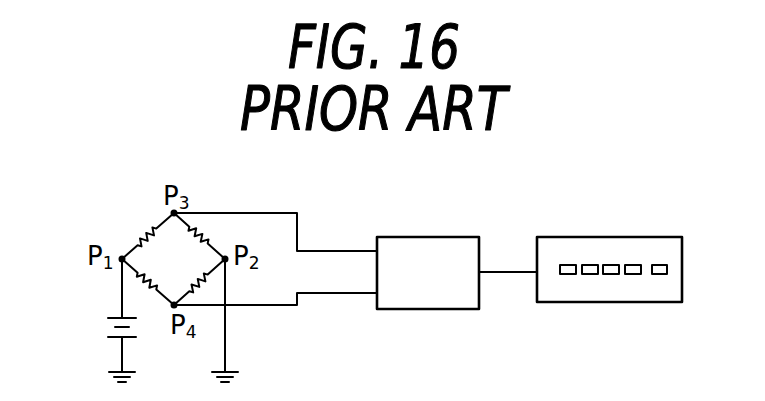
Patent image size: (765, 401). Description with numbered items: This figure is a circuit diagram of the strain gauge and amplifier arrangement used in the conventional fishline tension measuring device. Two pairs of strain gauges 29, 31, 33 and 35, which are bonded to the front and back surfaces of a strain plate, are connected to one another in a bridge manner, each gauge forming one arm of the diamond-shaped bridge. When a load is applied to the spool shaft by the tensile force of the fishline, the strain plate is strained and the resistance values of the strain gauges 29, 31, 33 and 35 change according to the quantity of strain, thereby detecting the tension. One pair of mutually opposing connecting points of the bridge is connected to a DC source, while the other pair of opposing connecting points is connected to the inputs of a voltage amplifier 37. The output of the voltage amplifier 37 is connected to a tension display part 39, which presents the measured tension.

The strain gauge 29 is at (146, 230).
The strain gauge 31 is at (206, 279).
The strain gauge 33 is at (202, 232).
The strain gauge 35 is at (144, 293).
The voltage amplifier 37 is at (433, 237).
The tension display part 39 is at (590, 237).